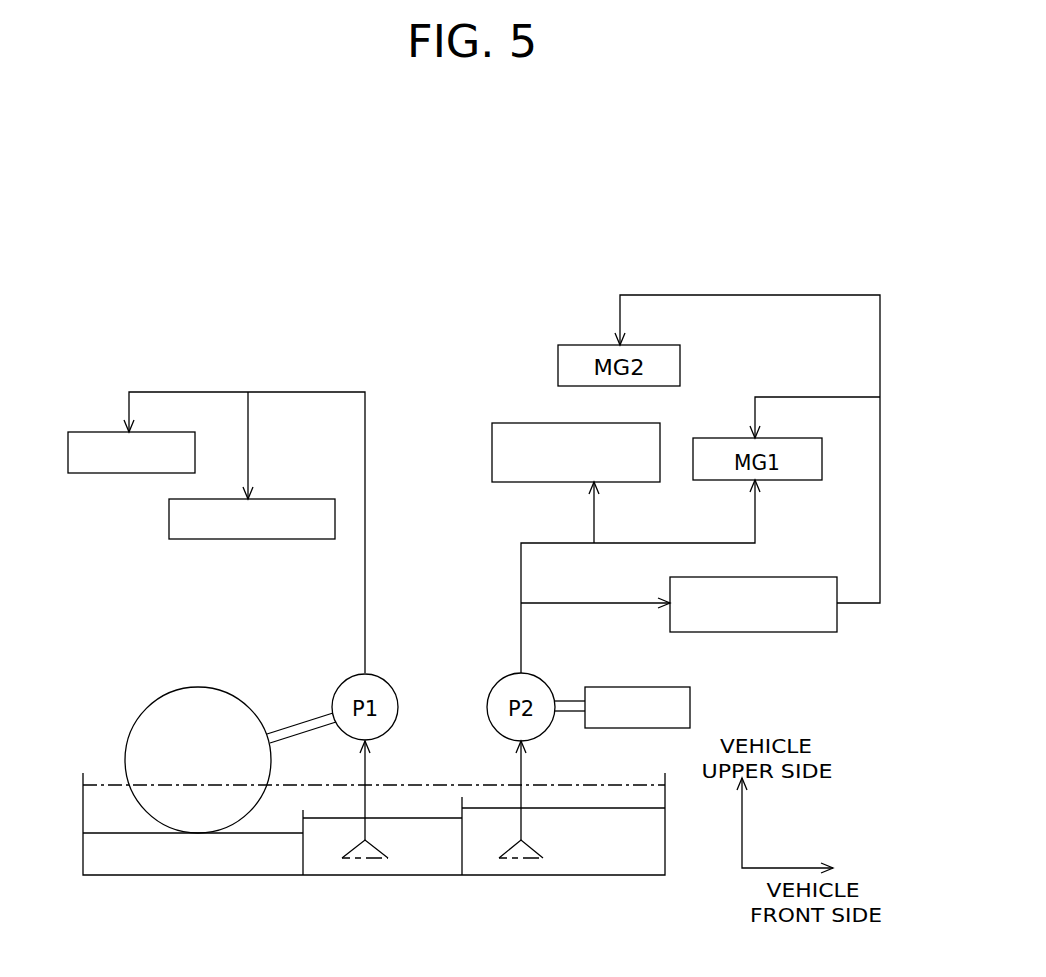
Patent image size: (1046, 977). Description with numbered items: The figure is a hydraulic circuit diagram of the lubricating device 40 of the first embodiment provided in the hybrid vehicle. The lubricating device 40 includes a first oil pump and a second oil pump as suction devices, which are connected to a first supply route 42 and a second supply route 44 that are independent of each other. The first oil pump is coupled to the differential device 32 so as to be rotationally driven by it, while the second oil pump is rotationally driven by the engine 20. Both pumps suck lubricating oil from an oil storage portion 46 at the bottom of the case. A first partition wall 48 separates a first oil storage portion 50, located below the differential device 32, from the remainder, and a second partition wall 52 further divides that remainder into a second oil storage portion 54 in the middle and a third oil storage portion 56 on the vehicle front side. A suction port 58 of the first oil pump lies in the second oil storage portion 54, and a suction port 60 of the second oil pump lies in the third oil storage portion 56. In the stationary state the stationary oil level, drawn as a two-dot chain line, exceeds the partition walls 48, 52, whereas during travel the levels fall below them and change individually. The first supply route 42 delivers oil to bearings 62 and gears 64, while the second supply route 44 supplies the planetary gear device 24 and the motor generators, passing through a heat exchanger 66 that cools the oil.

The engine 20 is at (627, 690).
The planetary gear device 24 is at (523, 423).
The differential device 32 is at (180, 707).
The lubricating device 40 is at (756, 200).
The first supply route 42 is at (213, 358).
The second supply route 44 is at (653, 253).
The oil storage portion 46 is at (655, 908).
The first partition wall 48 is at (302, 855).
The first oil storage portion 50 is at (160, 858).
The second partition wall 52 is at (458, 860).
The second oil storage portion 54 is at (327, 858).
The third oil storage portion 56 is at (583, 858).
The suction port 58 is at (367, 862).
The suction port 60 is at (527, 863).
The bearings 62 is at (217, 535).
The gears 64 is at (102, 473).
The heat exchanger 66 is at (757, 577).